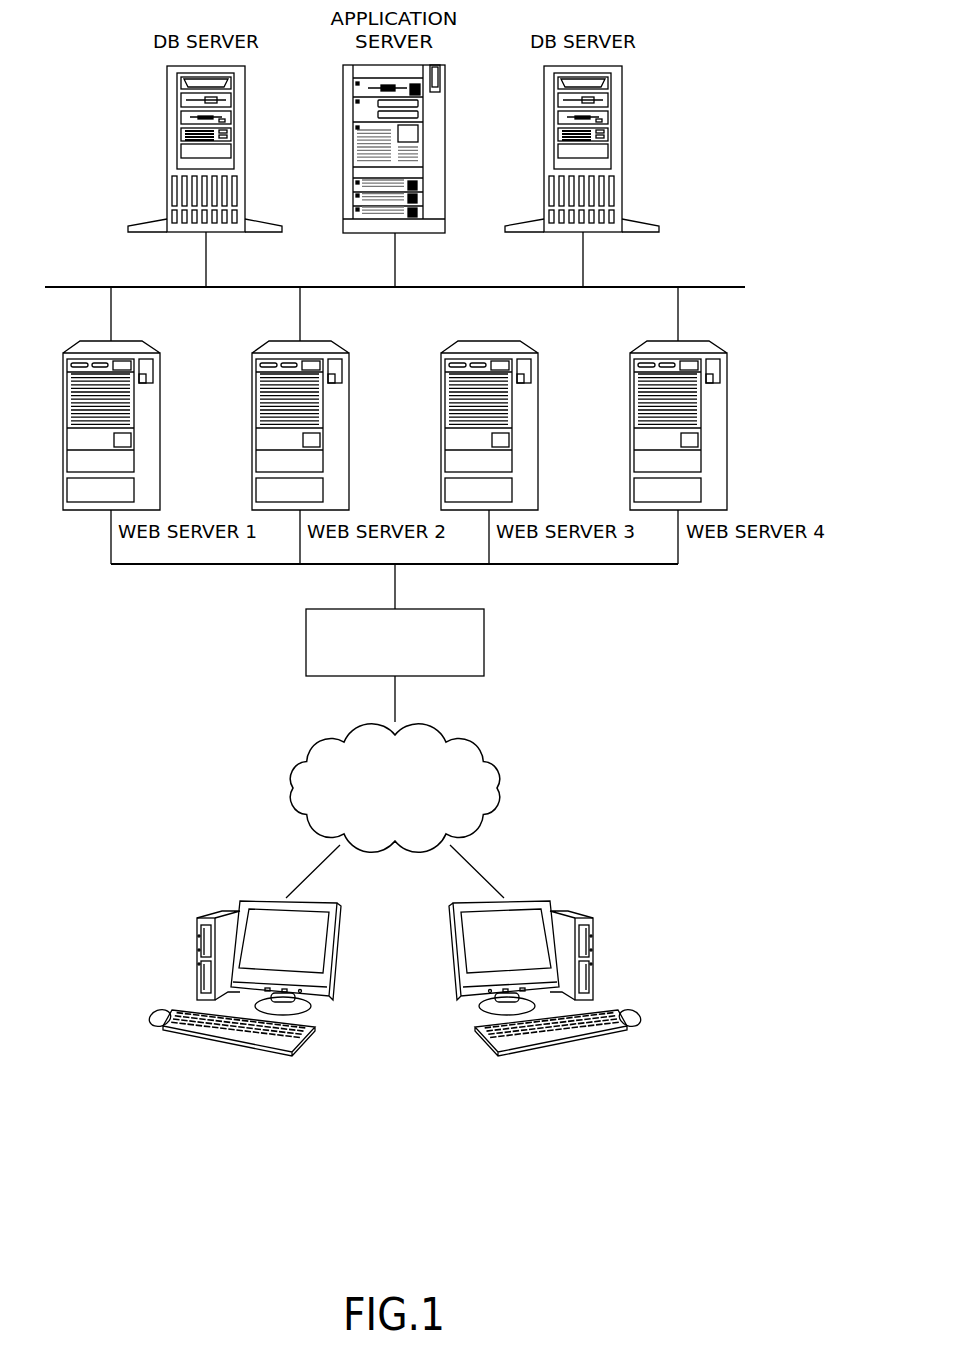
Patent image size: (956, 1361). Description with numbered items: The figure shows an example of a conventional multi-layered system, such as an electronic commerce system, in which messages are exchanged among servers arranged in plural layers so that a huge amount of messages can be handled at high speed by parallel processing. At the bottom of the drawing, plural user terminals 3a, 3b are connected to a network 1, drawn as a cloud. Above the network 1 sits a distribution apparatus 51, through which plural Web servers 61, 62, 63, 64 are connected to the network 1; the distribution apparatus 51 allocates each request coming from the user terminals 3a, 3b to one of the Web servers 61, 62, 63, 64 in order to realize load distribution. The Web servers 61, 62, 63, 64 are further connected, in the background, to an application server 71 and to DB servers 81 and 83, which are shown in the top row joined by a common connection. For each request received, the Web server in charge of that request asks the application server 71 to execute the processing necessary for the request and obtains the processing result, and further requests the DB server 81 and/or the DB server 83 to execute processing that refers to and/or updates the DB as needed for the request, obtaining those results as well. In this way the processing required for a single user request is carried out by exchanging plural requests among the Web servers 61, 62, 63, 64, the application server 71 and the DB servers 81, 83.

The DB server 81 is at (245, 148).
The application server 71 is at (445, 150).
The DB server 83 is at (622, 148).
The Web server 61 is at (160, 425).
The Web server 62 is at (349, 425).
The Web server 63 is at (538, 425).
The Web server 64 is at (727, 425).
The distribution apparatus 51 is at (484, 642).
The network 1 is at (490, 752).
The user terminal 3a is at (244, 898).
The user terminal 3b is at (546, 898).